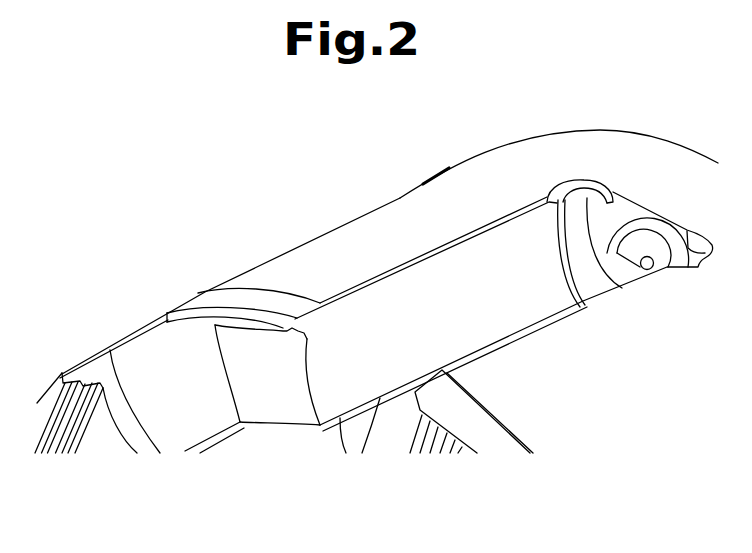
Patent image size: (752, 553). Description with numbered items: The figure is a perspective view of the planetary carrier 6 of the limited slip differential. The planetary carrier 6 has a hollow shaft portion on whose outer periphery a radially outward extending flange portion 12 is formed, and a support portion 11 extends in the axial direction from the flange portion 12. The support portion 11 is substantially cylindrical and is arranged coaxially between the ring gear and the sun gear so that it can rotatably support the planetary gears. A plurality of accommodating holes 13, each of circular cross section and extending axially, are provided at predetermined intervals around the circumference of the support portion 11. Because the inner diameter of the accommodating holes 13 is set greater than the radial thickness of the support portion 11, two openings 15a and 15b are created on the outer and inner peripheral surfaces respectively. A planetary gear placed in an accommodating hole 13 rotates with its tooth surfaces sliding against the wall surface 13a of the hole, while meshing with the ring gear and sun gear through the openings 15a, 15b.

The planetary carrier 6 is at (113, 127).
The support portion 11 is at (260, 268).
The flange portion 12 is at (672, 157).
The accommodating holes 13 is at (329, 321).
The wall surface of the accommodating holes 13a is at (373, 300).
The opening 15a is at (458, 243).
The opening 15b is at (343, 427).